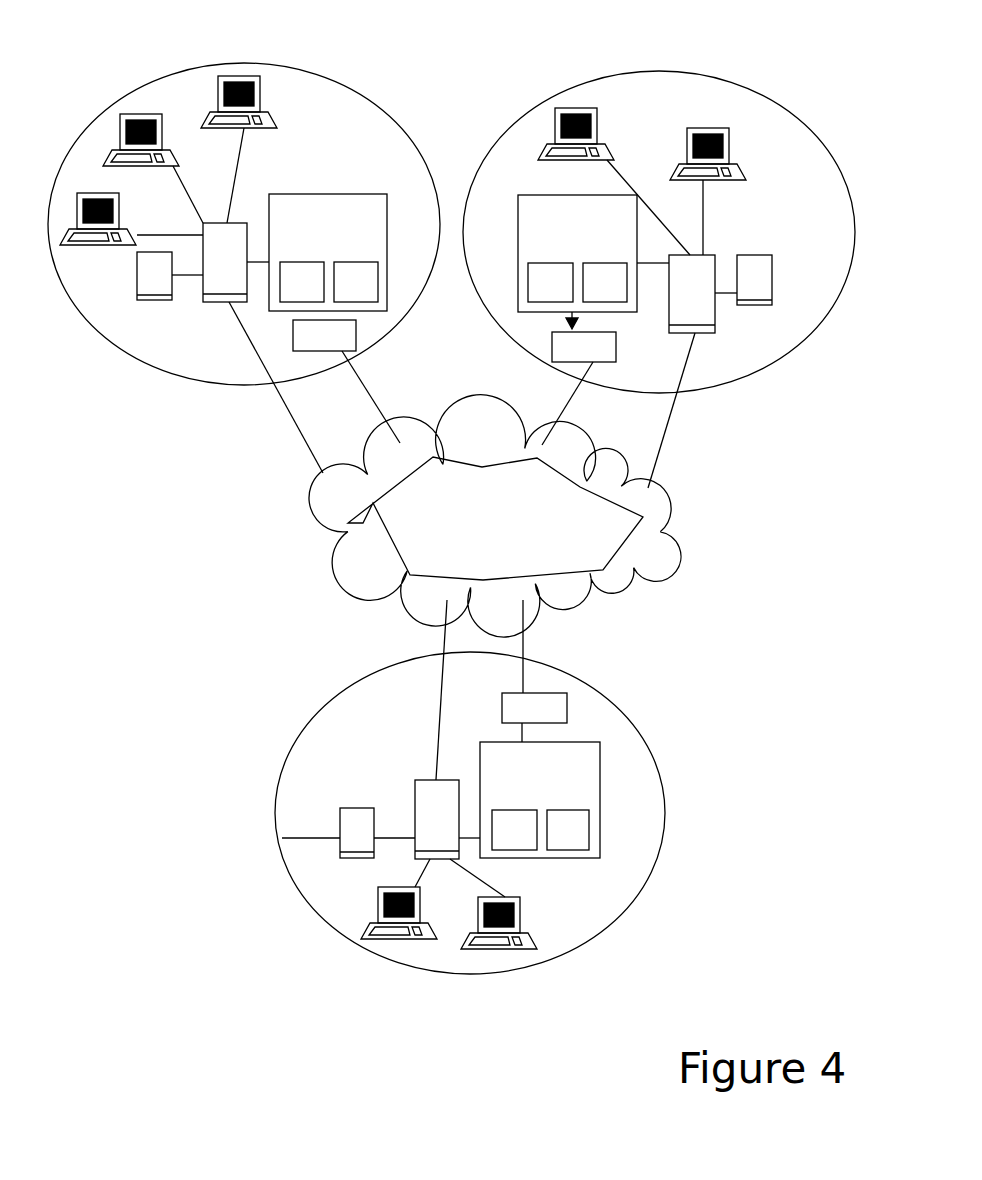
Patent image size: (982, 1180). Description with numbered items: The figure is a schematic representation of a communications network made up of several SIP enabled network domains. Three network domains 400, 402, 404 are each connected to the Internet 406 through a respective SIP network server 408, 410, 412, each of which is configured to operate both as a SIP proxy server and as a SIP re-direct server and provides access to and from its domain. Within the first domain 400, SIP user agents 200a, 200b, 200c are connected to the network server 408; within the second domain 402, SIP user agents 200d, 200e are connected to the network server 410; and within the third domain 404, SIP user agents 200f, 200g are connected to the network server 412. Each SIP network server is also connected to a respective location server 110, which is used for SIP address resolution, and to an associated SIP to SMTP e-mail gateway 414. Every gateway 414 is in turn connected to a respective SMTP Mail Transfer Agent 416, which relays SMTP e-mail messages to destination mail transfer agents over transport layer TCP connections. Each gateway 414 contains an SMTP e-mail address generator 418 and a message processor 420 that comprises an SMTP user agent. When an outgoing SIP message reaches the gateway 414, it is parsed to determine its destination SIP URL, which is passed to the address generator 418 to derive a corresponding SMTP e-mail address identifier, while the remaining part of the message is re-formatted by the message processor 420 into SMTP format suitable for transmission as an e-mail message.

The location server 110 is at (147, 302).
The SIP user agent 200a is at (257, 100).
The SIP user agent 200b is at (158, 138).
The SIP user agent 200c is at (118, 210).
The SIP user agent 200d is at (590, 127).
The SIP user agent 200e is at (723, 147).
The SIP user agent 200f is at (377, 907).
The SIP user agent 200g is at (525, 918).
The network domain 400 is at (148, 362).
The network domain 402 is at (802, 347).
The network domain 404 is at (662, 848).
The Internet 406 is at (623, 580).
The SIP network server 408 is at (217, 302).
The SIP network server 410 is at (715, 327).
The SIP network server 412 is at (413, 788).
The SIP to SMTP e-mail gateway 414 is at (348, 195).
The SMTP Mail Transfer Agent 416 is at (327, 352).
The SMTP e-mail address generator 418 is at (280, 302).
The message processor 420 is at (378, 285).